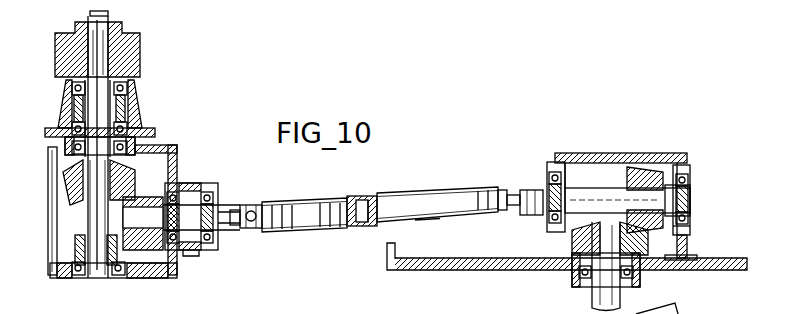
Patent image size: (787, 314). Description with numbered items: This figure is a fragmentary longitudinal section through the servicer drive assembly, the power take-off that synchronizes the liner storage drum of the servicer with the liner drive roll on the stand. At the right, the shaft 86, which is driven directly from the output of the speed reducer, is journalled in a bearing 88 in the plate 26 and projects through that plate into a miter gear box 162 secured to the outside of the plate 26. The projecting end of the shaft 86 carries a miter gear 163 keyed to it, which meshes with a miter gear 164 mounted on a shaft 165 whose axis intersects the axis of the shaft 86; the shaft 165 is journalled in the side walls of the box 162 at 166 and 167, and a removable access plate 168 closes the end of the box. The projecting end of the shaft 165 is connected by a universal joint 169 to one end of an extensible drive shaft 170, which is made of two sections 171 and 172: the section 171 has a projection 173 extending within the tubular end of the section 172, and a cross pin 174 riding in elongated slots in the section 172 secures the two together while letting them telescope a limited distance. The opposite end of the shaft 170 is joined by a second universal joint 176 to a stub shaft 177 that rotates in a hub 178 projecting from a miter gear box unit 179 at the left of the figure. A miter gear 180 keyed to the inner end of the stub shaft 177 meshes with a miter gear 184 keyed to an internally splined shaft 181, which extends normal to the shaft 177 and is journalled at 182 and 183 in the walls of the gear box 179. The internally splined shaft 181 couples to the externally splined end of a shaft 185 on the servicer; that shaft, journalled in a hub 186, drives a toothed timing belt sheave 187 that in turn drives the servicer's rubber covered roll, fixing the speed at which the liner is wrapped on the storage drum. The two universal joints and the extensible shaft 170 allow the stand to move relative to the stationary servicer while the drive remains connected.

The plate 26 is at (420, 266).
The shaft 86 is at (596, 285).
The bearing 88 is at (640, 280).
The miter gear box 162 is at (684, 168).
The miter gear 163 is at (560, 243).
The miter gear 164 is at (648, 168).
The shaft 165 is at (607, 200).
The journal 166 is at (547, 181).
The journal 167 is at (690, 220).
The removable access plate 168 is at (598, 153).
The universal joint 169 is at (506, 210).
The extensible drive shaft 170 is at (430, 191).
The shaft section 171 is at (305, 175).
The shaft section 172 is at (428, 222).
The projection 173 is at (342, 227).
The cross pin 174 is at (372, 227).
The universal joint 176 is at (258, 227).
The stub shaft 177 is at (192, 208).
The hub 178 is at (197, 252).
The miter gear box unit 179 is at (158, 144).
The miter gear 180 is at (157, 244).
The internally splined shaft 181 is at (96, 262).
The journal 182 is at (82, 270).
The journal 183 is at (128, 118).
The miter gear 184 is at (122, 170).
The shaft 185 is at (108, 22).
The hub 186 is at (65, 113).
The toothed timing belt sheave 187 is at (130, 60).